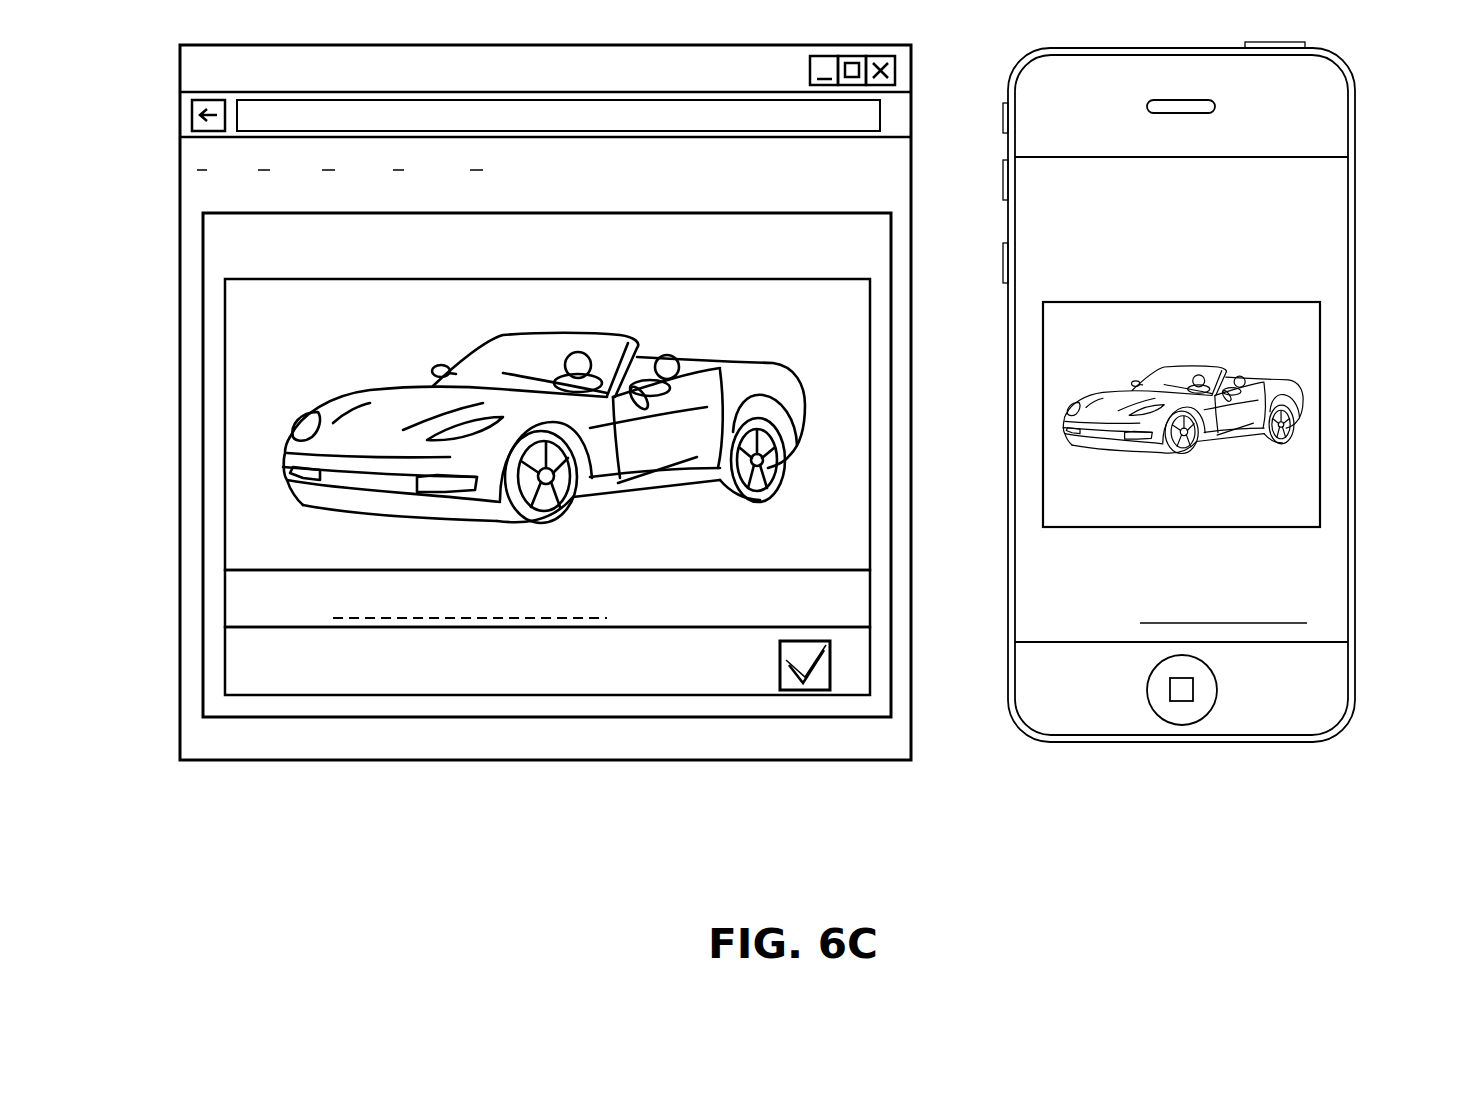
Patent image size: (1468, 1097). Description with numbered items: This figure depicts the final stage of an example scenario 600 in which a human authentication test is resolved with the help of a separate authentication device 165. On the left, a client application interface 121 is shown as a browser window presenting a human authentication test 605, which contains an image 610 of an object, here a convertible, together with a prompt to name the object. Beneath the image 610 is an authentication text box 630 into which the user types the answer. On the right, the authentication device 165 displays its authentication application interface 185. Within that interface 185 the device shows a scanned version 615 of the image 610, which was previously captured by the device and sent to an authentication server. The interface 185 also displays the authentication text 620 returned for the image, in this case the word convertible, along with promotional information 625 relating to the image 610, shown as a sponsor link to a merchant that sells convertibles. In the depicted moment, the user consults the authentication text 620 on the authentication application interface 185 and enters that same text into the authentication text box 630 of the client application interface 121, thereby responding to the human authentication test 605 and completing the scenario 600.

The example scenario 600 is at (1425, 894).
The client application interface 121 is at (272, 760).
The human authentication test 605 is at (203, 257).
The image 610 is at (233, 468).
The authentication text box 630 is at (257, 605).
The authentication device 165 is at (1050, 742).
The authentication application interface 185 is at (1335, 194).
The authentication text 620 is at (1247, 244).
The scanned version 615 is at (1311, 384).
The promotional information 625 is at (1313, 592).